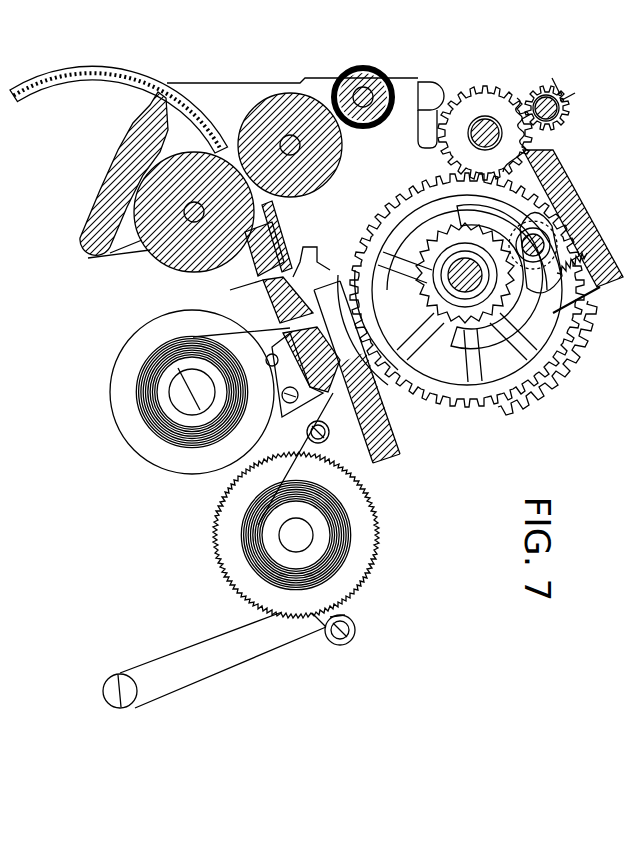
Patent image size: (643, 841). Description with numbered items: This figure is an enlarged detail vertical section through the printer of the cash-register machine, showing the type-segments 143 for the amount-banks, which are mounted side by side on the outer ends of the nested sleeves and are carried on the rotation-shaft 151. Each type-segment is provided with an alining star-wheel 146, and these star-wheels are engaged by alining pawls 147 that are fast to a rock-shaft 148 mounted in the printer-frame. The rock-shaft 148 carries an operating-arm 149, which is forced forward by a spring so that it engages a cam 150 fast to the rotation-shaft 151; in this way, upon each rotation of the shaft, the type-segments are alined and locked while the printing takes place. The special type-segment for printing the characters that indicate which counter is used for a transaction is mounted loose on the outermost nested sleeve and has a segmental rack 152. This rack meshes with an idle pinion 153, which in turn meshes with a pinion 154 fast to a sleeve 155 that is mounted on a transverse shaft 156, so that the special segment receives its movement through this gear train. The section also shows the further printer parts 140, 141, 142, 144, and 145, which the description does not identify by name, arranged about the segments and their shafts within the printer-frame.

The frame plate 140 is at (550, 313).
The spool 141 is at (192, 392).
The ratchet wheel and rod 142 is at (241, 580).
The type-segments 143 is at (520, 400).
The upper roller 144 is at (321, 420).
The lower roller 145 is at (321, 420).
The alining star-wheel 146 is at (457, 300).
The alining pawls 147 is at (521, 152).
The rock-shaft 148 is at (550, 240).
The operating-arm 149 is at (548, 282).
The cam 150 is at (538, 258).
The rotation-shaft 151 is at (452, 287).
The segmental rack 152 is at (386, 112).
The idle pinion 153 is at (321, 420).
The pinion 154 is at (581, 71).
The sleeve 155 is at (559, 59).
The transverse shaft 156 is at (565, 115).